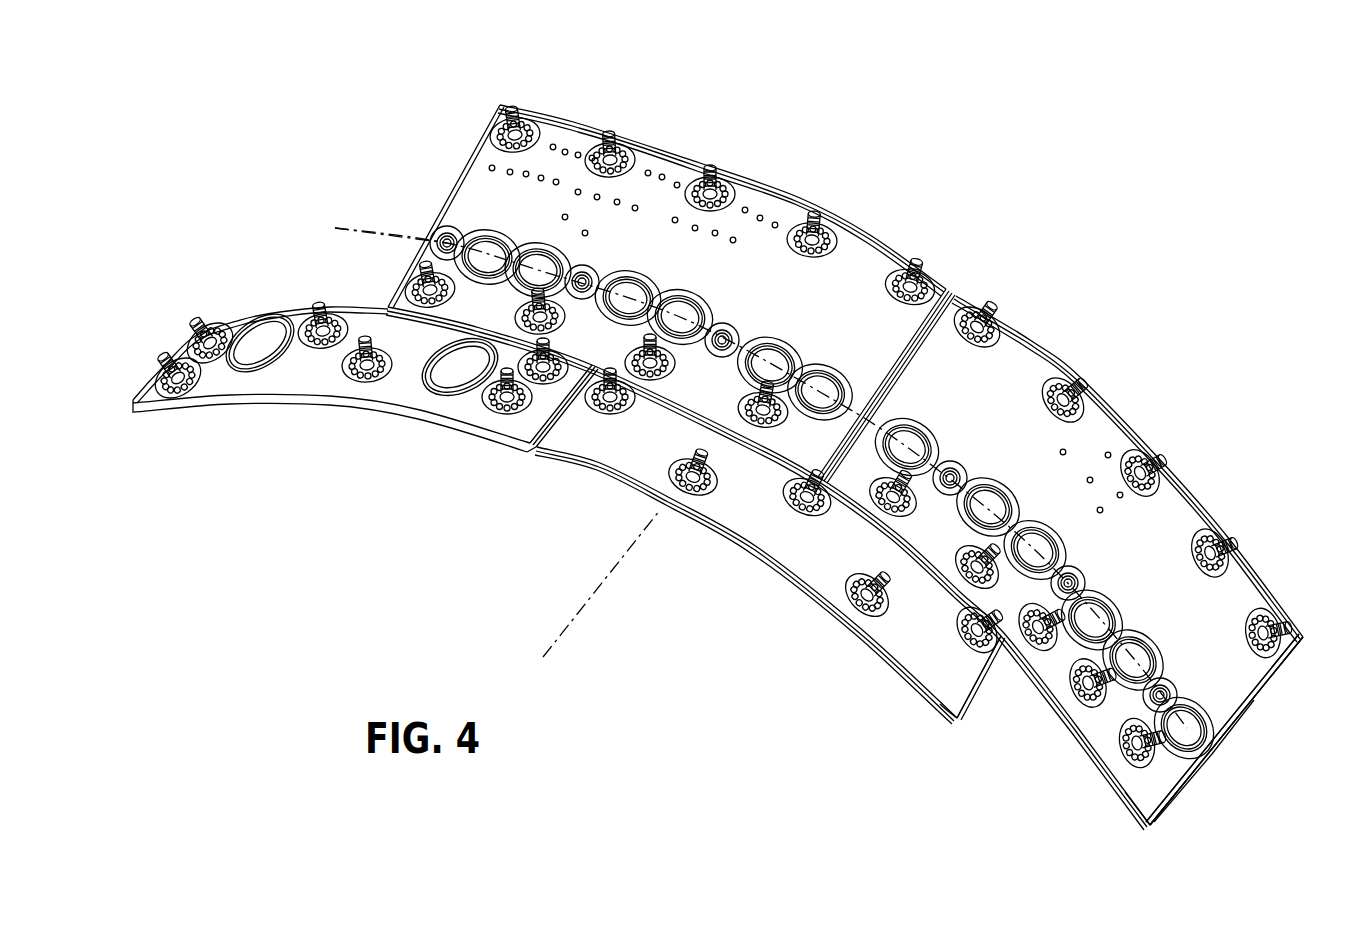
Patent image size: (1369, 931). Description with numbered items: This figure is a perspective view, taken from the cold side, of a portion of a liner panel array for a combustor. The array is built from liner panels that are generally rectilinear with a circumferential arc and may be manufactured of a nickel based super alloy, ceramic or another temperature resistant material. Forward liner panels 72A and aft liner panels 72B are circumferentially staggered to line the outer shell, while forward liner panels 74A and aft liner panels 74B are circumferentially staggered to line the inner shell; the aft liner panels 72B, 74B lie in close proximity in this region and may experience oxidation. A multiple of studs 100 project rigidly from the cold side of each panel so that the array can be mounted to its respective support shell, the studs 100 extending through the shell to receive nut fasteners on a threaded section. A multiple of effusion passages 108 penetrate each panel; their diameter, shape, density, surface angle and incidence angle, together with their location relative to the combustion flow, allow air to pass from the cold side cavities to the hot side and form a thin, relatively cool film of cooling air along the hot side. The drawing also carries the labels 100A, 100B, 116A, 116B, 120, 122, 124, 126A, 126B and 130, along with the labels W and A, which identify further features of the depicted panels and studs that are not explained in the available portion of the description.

The studs 100 is at (695, 490).
The second seal carrier segment 100A is at (1170, 778).
The third seal carrier segment 100B is at (1277, 622).
The effusion passages 108 is at (1093, 480).
The first aperture 116A is at (1022, 528).
The second aperture 116B is at (1074, 580).
The outer panel 120 is at (1274, 677).
The flange 122 is at (707, 393).
The rail 124 is at (770, 193).
The first circumferential end 126A is at (935, 290).
The second circumferential end 126B is at (480, 147).
The corner 130 is at (1140, 780).
The forward liner panels 72A is at (957, 718).
The forward liner panels 74A is at (965, 725).
The aft liner panels 72B is at (1228, 752).
The aft liner panels 74B is at (1233, 758).
The axis W is at (345, 228).
The engine axis A is at (580, 617).